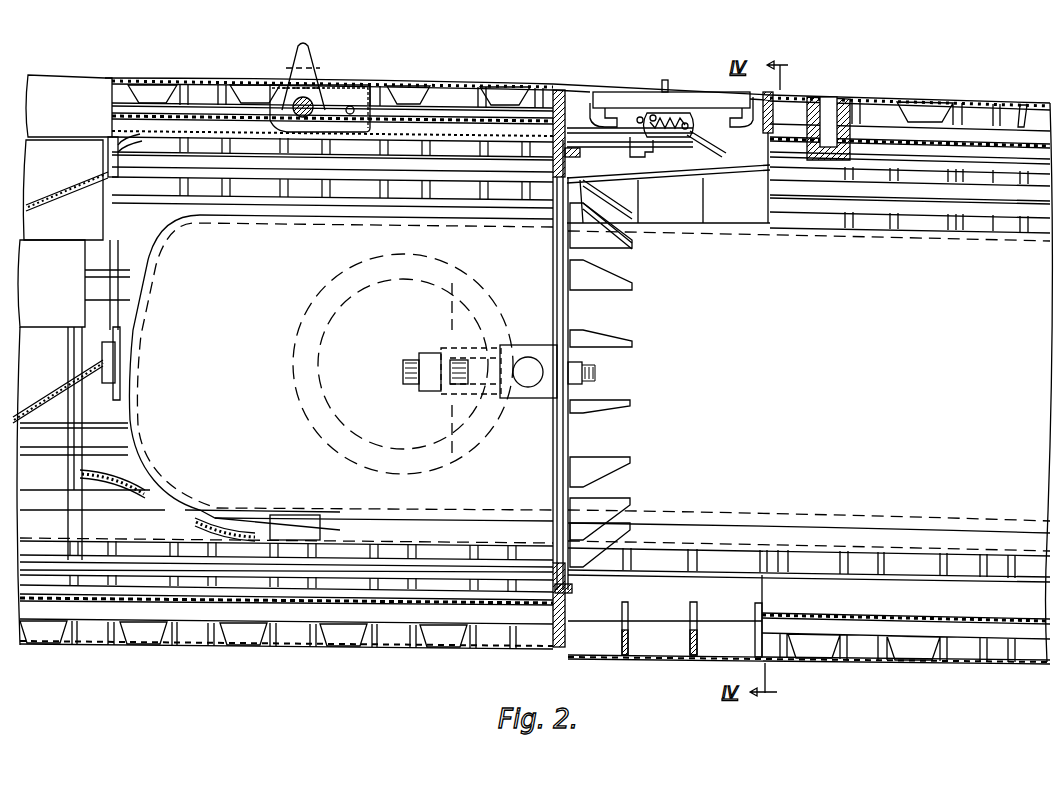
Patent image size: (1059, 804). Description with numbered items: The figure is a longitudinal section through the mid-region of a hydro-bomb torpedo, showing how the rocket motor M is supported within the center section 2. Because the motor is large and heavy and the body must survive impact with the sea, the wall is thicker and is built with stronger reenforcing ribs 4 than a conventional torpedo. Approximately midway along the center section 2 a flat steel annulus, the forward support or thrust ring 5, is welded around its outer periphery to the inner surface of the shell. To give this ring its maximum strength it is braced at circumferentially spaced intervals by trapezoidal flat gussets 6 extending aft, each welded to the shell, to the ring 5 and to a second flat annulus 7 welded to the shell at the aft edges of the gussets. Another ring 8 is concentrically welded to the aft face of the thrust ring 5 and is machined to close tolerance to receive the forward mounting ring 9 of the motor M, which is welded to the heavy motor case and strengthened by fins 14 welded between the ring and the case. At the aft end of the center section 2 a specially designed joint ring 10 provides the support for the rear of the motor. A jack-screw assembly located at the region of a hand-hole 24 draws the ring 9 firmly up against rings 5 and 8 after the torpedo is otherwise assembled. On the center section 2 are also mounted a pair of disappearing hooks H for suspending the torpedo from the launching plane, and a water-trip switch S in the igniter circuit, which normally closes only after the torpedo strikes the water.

The center section 2 is at (462, 86).
The reenforcing ribs 4 is at (840, 650).
The forward support or thrust ring 5 is at (565, 95).
The flat gussets 6 is at (668, 178).
The second flat ring or annulus 7 is at (766, 136).
The ring 8 is at (572, 600).
The forward mounting ring 9 is at (572, 318).
The joint ring 10 is at (712, 143).
The fins 14 is at (610, 405).
The hand-hole 24 is at (338, 325).
The disappearing hooks H is at (322, 62).
The water-trip switch S is at (671, 100).
The rocket motor M is at (589, 383).